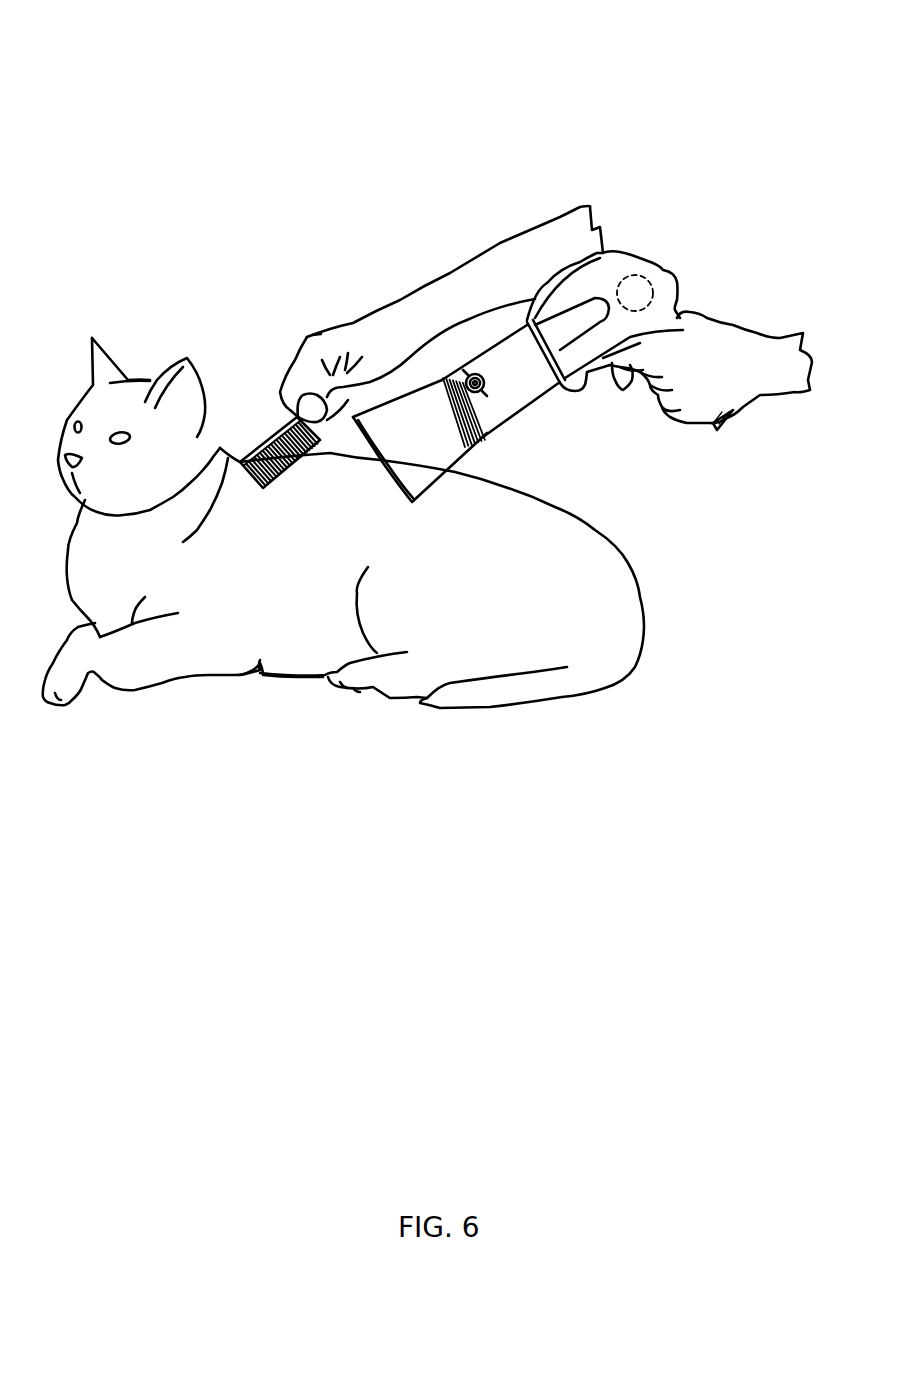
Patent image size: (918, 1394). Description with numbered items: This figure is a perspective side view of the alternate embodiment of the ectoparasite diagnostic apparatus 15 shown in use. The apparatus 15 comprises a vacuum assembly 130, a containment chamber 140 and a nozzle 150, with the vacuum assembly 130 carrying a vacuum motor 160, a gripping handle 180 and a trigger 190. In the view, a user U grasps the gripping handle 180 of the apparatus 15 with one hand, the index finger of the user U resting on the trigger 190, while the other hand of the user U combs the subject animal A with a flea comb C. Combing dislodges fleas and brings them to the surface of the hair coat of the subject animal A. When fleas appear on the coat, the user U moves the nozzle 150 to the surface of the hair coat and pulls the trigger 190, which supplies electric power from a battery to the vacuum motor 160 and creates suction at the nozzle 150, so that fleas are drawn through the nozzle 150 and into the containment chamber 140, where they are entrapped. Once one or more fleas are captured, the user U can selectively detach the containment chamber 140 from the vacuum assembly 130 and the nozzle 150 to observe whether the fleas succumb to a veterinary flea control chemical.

The ectoparasite diagnostic apparatus 15 is at (540, 92).
The subject animal A is at (298, 578).
The flea comb C is at (270, 437).
The user U is at (512, 260).
The vacuum assembly 130 is at (620, 263).
The containment chamber 140 is at (503, 398).
The nozzle 150 is at (427, 450).
The vacuum motor 160 is at (655, 294).
The gripping handle 180 is at (715, 428).
The trigger 190 is at (623, 390).